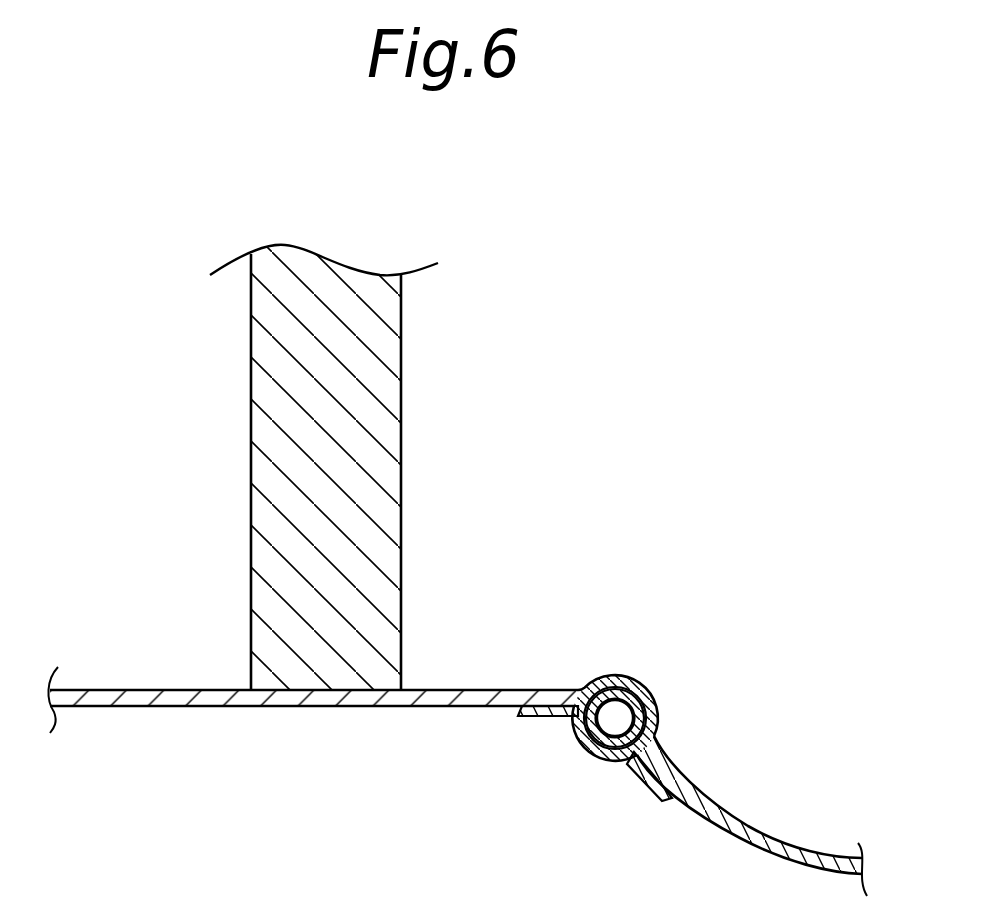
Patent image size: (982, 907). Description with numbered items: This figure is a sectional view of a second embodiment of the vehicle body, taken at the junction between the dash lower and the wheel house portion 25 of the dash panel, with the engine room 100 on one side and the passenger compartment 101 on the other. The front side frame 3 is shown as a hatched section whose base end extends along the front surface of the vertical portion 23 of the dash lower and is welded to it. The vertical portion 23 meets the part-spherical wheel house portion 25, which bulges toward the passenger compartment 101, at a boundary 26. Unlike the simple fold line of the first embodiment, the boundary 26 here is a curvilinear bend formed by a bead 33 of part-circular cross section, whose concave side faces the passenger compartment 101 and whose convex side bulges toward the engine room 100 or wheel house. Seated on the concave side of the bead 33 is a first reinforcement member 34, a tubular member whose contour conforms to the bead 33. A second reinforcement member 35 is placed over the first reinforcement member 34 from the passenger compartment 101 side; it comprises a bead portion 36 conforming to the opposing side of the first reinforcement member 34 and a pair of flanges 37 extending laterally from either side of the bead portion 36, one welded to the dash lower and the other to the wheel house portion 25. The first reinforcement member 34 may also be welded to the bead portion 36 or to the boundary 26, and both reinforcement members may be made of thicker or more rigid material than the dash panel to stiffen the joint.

The front side frame 3 is at (396, 390).
The vertical portion 23 is at (468, 690).
The wheel house portion 25 is at (787, 838).
The boundary 26 is at (645, 663).
The bead 33 is at (598, 680).
The first reinforcement member 34 is at (650, 694).
The second reinforcement member 35 is at (527, 801).
The bead portion 36 is at (590, 757).
The flange 37 is at (545, 718).
The engine room 100 is at (163, 398).
The passenger compartment 101 is at (180, 832).